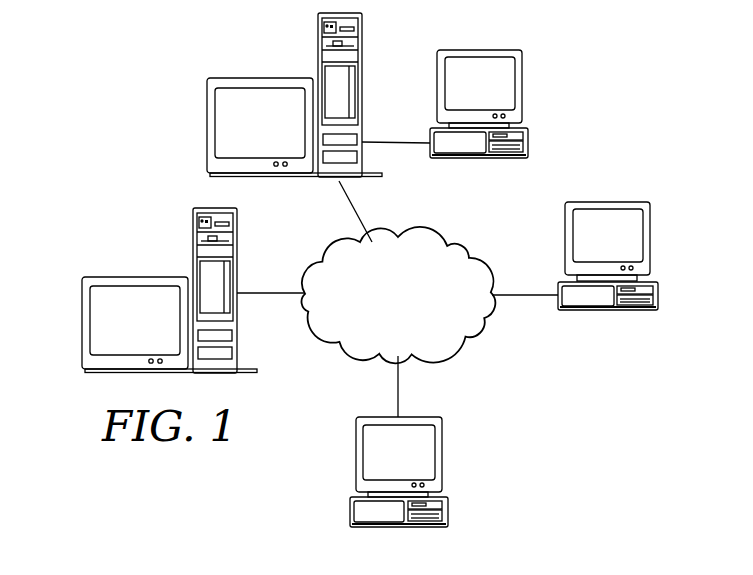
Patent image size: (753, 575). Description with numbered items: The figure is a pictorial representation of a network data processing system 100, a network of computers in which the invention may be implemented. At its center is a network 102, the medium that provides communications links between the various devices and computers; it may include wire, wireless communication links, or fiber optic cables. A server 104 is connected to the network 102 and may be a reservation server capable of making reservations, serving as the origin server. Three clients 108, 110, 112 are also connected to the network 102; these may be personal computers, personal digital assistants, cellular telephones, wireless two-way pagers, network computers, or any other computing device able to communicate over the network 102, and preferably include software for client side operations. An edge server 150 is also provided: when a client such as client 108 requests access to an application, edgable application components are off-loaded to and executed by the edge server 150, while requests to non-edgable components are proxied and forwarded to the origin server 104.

The network data processing system 100 is at (92, 94).
The network 102 is at (418, 326).
The server 104 is at (82, 318).
The client 108 is at (523, 92).
The client 110 is at (650, 242).
The client 112 is at (442, 460).
The edge server 150 is at (207, 125).